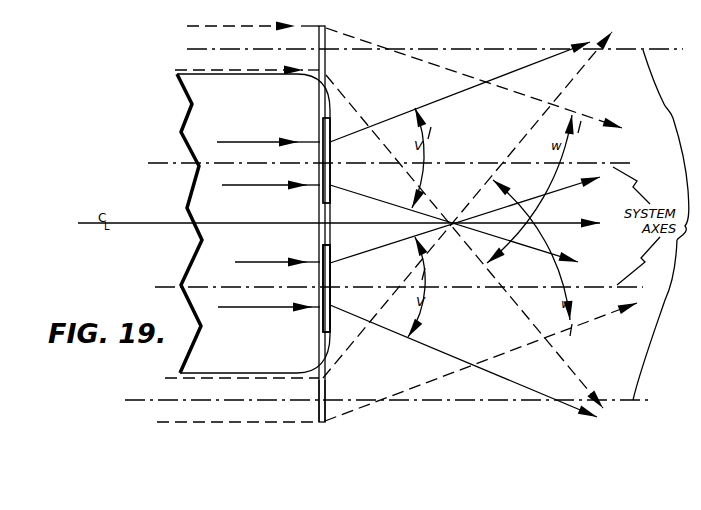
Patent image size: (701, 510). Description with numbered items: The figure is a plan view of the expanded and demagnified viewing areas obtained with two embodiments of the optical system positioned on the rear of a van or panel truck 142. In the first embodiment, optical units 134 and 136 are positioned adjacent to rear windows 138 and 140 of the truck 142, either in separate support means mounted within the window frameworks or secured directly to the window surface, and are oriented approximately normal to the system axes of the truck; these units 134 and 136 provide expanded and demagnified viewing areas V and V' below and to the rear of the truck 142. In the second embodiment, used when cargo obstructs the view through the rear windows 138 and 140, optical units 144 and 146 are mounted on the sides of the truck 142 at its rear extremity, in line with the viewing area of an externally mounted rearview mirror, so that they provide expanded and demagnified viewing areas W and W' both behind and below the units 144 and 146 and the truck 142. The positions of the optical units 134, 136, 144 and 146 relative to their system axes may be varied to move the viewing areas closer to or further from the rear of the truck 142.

The optical unit 146 is at (326, 42).
The van or panel truck 142 is at (251, 113).
The rear window 140 is at (323, 120).
The optical unit 136 is at (331, 176).
The optical unit 134 is at (336, 273).
The rear window 138 is at (323, 317).
The optical unit 144 is at (325, 406).